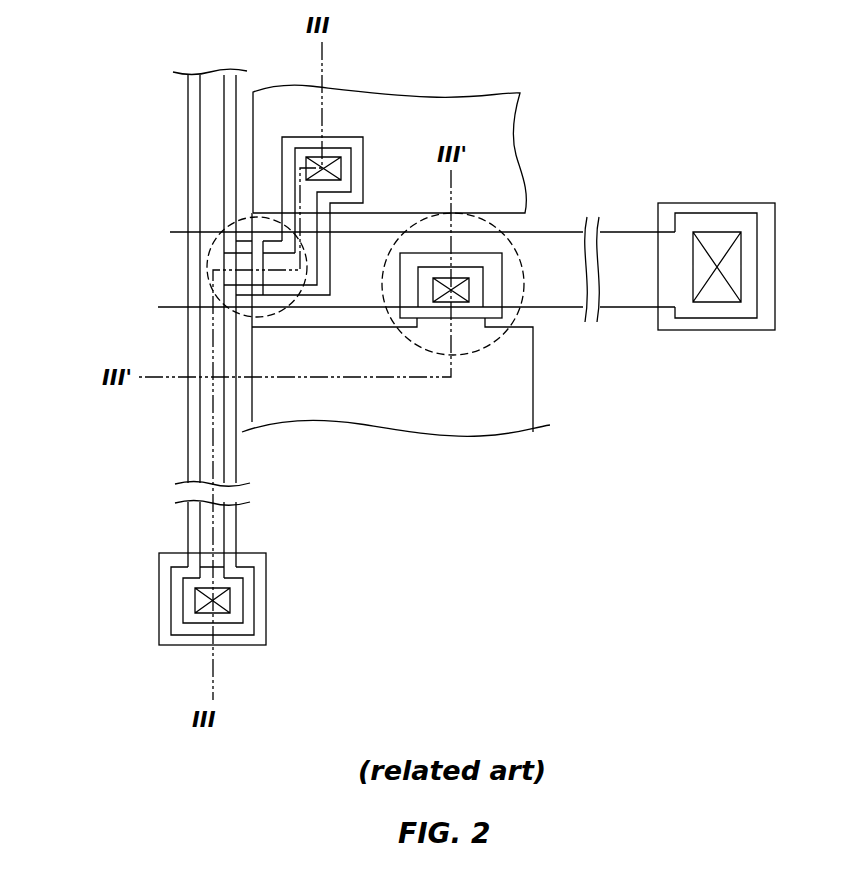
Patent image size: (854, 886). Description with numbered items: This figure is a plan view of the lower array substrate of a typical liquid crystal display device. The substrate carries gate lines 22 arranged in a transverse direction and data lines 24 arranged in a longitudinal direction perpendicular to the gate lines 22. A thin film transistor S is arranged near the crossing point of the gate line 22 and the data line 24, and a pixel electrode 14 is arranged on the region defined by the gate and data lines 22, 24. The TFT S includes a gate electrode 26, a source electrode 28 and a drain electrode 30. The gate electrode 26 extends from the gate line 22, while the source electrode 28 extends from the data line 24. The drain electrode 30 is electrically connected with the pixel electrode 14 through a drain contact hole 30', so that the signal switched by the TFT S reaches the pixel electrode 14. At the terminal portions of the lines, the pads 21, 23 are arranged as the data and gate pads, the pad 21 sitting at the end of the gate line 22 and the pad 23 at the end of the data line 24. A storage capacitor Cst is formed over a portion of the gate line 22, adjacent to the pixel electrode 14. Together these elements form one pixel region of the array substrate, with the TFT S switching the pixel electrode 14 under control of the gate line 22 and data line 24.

The pixel electrode 14 is at (520, 150).
The data pad 21 is at (722, 232).
The gate line 22 is at (623, 234).
The gate pad 23 is at (232, 600).
The data line 24 is at (208, 153).
The gate electrode 26 is at (275, 288).
The source electrode 28 is at (232, 246).
The drain electrode 30 is at (256, 262).
The drain contact hole 30' is at (347, 111).
The TFT S is at (207, 261).
The storage capacitor Cst is at (480, 348).